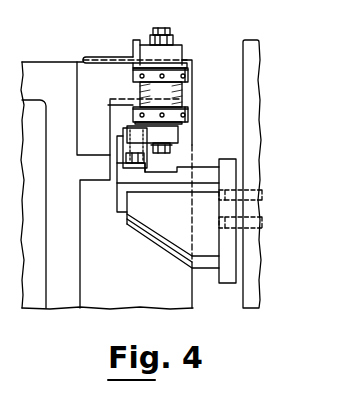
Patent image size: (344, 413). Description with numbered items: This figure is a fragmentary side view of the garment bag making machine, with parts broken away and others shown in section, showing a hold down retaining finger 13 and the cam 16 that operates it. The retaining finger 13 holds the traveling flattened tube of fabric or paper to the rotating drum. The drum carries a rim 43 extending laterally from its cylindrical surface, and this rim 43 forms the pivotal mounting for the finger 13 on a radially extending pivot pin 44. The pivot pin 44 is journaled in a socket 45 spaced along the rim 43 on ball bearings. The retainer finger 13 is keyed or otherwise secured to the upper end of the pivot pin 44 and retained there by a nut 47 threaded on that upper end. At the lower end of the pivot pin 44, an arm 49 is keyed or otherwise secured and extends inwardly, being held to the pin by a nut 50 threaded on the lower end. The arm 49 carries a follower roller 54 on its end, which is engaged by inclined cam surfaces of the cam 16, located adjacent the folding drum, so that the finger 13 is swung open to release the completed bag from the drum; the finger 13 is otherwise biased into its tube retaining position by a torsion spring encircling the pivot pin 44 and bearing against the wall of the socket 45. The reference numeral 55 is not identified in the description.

The retaining finger 13 is at (138, 50).
The cam 16 is at (260, 186).
The rim 43 is at (190, 80).
The pivot pin 44 is at (166, 30).
The socket 45 is at (182, 96).
The nut 47 is at (183, 38).
The arm 49 is at (123, 132).
The nut 50 is at (176, 149).
The follower roller 54 is at (148, 157).
The lead wire 55 is at (133, 66).